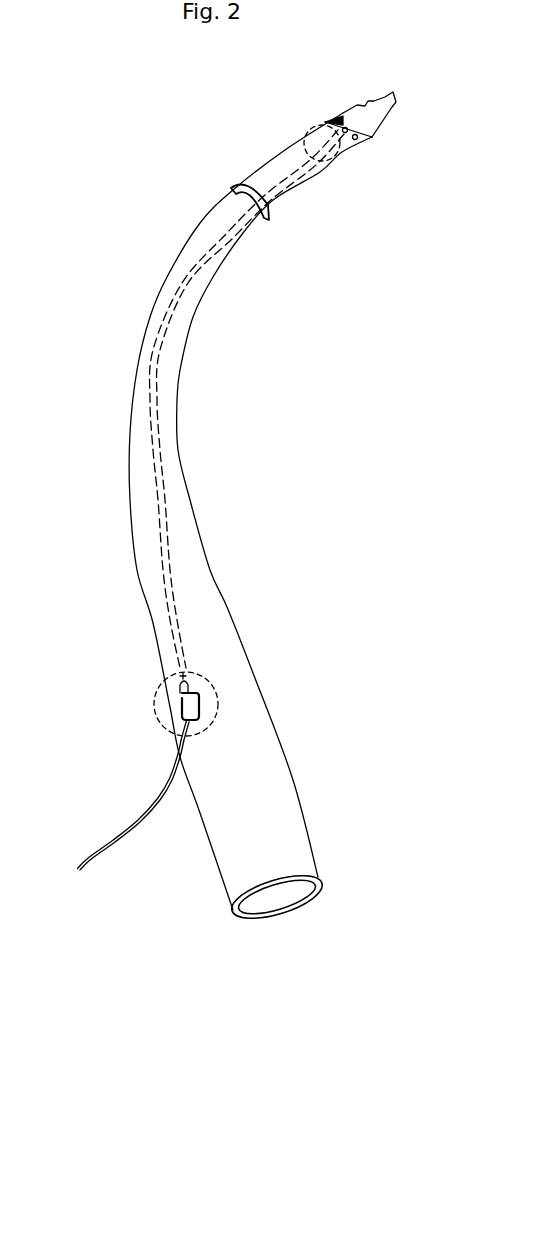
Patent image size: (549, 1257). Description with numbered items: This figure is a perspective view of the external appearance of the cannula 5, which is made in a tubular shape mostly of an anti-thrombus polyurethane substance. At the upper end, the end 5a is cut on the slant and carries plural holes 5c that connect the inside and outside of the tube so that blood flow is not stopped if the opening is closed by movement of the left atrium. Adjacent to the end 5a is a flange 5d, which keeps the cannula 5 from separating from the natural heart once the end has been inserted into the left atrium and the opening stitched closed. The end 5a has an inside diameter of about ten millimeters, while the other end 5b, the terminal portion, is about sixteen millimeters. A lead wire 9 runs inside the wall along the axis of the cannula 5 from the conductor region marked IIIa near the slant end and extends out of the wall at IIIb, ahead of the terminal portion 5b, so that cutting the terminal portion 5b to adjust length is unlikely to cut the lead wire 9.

The cannula 5 is at (188, 532).
The end of the cannula 5a is at (372, 141).
The other end of the cannula 5b is at (307, 857).
The holes 5c is at (393, 92).
The flange 5d is at (268, 221).
The lead wire 9 is at (127, 837).
The section location IIIa is at (337, 162).
The section location IIIb is at (44, 667).